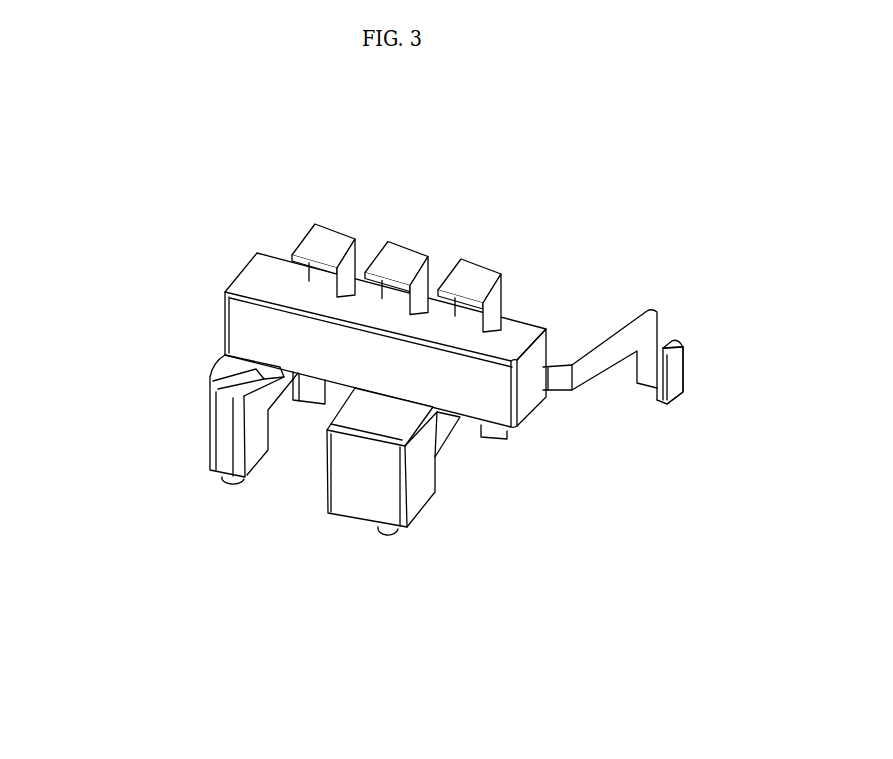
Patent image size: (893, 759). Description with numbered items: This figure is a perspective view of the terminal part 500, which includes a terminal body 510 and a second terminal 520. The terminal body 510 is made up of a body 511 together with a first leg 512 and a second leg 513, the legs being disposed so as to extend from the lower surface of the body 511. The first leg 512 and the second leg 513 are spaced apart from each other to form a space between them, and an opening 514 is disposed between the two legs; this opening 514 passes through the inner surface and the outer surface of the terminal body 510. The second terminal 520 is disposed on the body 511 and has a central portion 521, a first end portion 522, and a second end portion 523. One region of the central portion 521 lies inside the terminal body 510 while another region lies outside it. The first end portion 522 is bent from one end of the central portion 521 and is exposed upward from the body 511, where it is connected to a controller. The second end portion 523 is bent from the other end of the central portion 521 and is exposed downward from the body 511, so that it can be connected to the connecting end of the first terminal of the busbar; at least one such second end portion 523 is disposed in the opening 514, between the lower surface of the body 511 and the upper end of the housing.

The terminal part 500 is at (180, 134).
The terminal body 510 is at (308, 448).
The body 511 is at (257, 335).
The first leg 512 is at (374, 482).
The second leg 513 is at (223, 452).
The opening 514 is at (312, 453).
The second terminal 520 is at (531, 293).
The central portion 521 is at (470, 316).
The first end portion 522 is at (467, 285).
The second end portion 523 is at (313, 388).